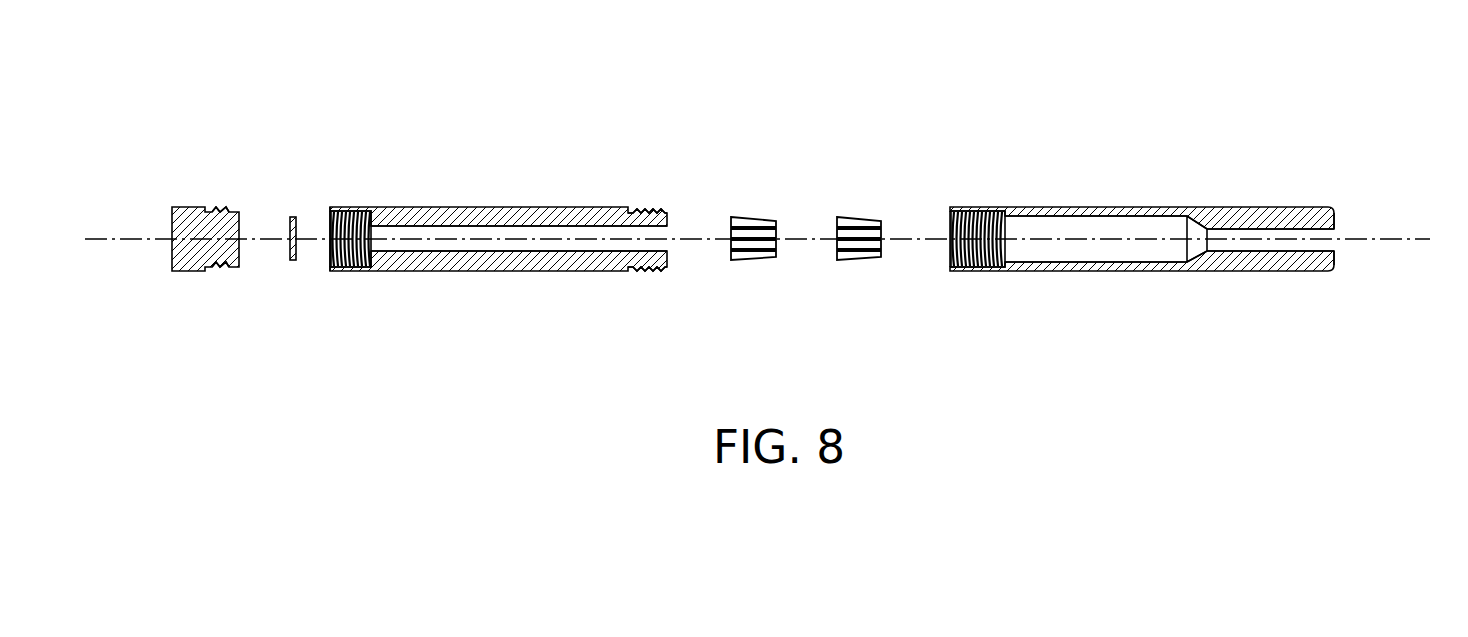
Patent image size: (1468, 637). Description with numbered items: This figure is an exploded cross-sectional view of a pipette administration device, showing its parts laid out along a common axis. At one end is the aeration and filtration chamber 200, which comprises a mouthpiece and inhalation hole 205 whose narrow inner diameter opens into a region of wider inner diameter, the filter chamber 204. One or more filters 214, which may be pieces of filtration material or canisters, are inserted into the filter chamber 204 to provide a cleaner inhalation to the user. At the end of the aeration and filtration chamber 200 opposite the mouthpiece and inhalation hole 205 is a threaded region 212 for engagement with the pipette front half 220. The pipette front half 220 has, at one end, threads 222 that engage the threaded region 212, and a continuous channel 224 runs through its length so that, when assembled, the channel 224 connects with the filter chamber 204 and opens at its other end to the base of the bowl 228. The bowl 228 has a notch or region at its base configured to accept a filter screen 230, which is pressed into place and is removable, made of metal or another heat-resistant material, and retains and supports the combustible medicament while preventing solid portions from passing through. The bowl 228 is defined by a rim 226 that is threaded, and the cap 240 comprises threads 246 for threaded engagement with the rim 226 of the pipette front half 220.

The aeration and filtration chamber 200 is at (1243, 272).
The filter chamber 204 is at (1092, 228).
The mouthpiece and inhalation hole 205 is at (1346, 229).
The threaded region 212 is at (958, 212).
The filter 214 is at (872, 218).
The pipette front half 220 is at (486, 272).
The threads 222 is at (641, 212).
The channel 224 is at (489, 228).
The rim 226 is at (348, 210).
The bowl 228 is at (321, 214).
The filter screen 230 is at (293, 262).
The cap 240 is at (183, 272).
The external threads of plug 246 is at (226, 212).